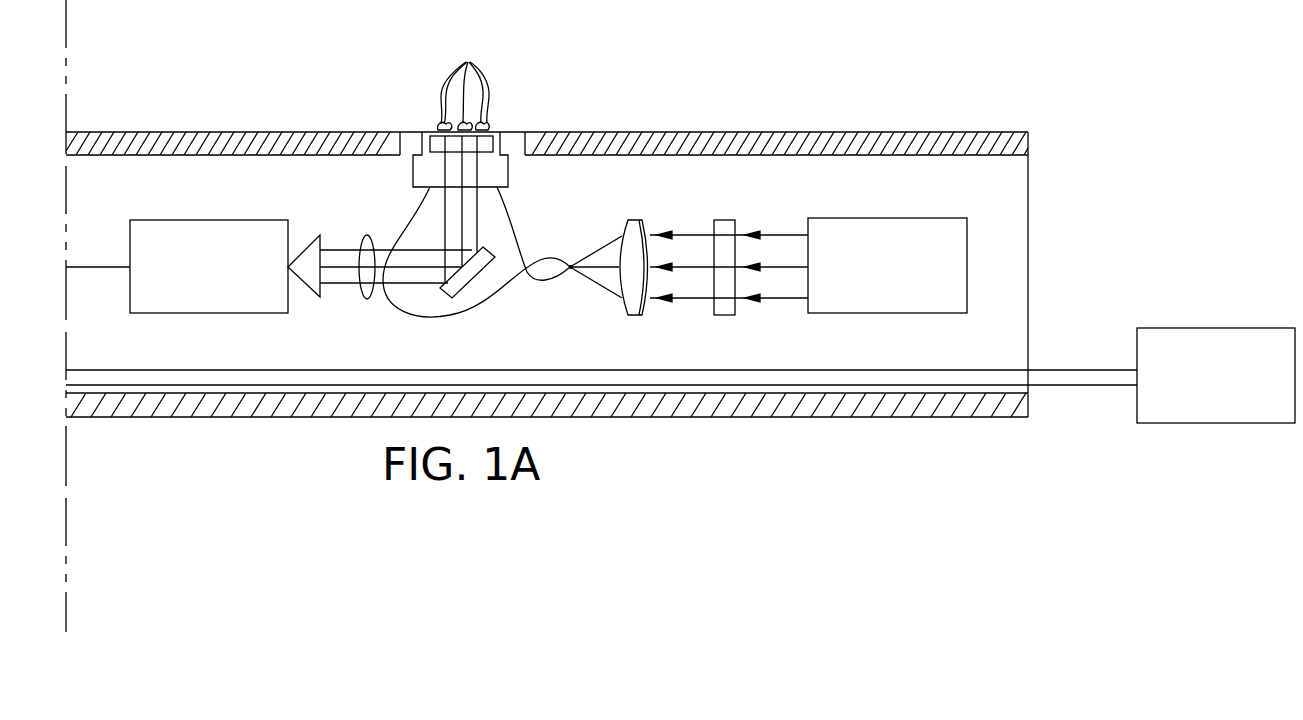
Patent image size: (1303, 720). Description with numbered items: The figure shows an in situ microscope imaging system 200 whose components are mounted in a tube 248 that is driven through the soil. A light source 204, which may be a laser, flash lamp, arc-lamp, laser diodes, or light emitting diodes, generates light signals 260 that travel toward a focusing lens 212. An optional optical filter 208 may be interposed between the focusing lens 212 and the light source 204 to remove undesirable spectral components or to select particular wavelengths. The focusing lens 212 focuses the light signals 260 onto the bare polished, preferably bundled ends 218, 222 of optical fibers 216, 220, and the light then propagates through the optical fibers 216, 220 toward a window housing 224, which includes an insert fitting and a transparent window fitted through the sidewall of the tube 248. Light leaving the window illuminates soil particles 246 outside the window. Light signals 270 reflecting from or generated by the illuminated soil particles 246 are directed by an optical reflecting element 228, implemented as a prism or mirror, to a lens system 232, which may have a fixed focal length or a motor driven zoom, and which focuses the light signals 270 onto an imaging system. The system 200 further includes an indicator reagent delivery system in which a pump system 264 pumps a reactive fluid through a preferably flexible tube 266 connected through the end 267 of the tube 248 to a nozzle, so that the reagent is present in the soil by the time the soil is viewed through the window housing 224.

The in situ microscope imaging system 200 is at (662, 85).
The light source 204 is at (886, 313).
The optical filter 208 is at (737, 308).
The focusing lens 212 is at (644, 308).
The optical fiber 216 is at (497, 211).
The bundled end of optical fiber 218 is at (573, 270).
The optical fiber 220 is at (430, 318).
The bundled end of optical fiber 222 is at (575, 261).
The window housing 224 is at (513, 133).
The optical reflecting element 228 is at (467, 284).
The lens system 232 is at (205, 220).
The soil particles 246 is at (465, 156).
The tube 248 is at (915, 132).
The light signals 260 is at (779, 298).
The pump system 264 is at (1215, 328).
The flexible tube 266 is at (1093, 370).
The end of the tube 267 is at (1028, 197).
The light signals 270 is at (367, 235).